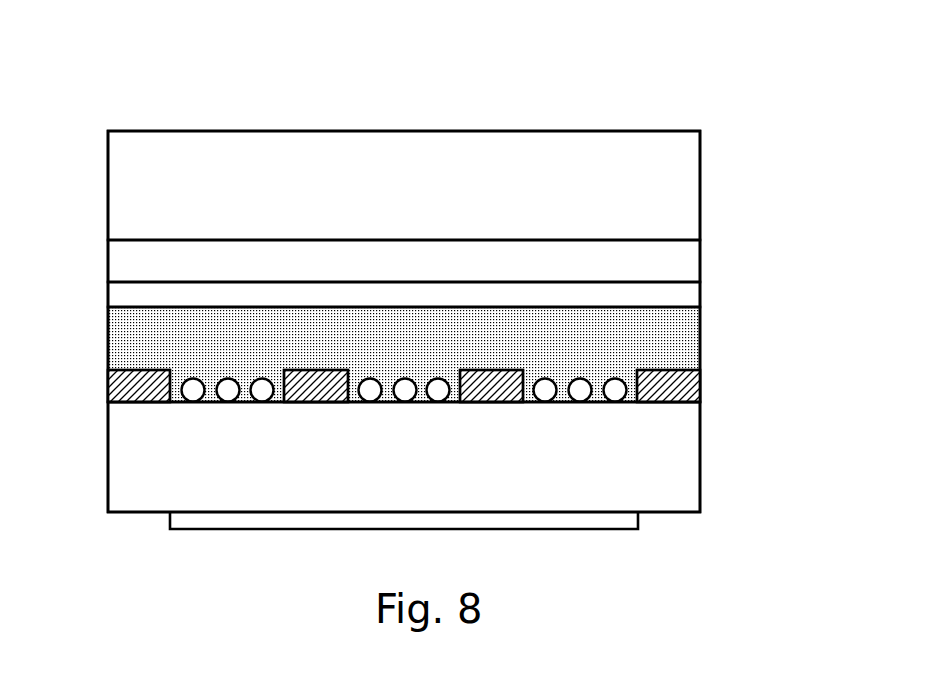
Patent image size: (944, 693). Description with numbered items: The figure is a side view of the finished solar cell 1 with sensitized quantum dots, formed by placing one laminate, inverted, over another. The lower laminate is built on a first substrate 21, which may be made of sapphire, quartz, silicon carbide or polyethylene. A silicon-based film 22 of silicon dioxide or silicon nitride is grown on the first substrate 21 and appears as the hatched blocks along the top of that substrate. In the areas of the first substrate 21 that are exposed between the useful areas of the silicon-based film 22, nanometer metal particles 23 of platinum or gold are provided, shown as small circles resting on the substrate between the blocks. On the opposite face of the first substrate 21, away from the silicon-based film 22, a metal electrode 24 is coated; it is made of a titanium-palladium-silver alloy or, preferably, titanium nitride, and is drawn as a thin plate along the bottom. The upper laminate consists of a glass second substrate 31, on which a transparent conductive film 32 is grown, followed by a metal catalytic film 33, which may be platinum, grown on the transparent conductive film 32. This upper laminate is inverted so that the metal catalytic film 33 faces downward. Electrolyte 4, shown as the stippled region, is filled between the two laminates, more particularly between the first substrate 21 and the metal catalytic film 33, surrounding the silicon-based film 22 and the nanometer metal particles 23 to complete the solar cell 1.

The solar cell 1 is at (560, 106).
The electrolyte 4 is at (120, 340).
The first substrate 21 is at (700, 453).
The silicon-based film 22 is at (700, 382).
The nanometer metal particles 23 is at (619, 374).
The metal electrode 24 is at (640, 519).
The second substrate 31 is at (700, 183).
The transparent conductive film 32 is at (700, 262).
The metal catalytic film 33 is at (700, 295).